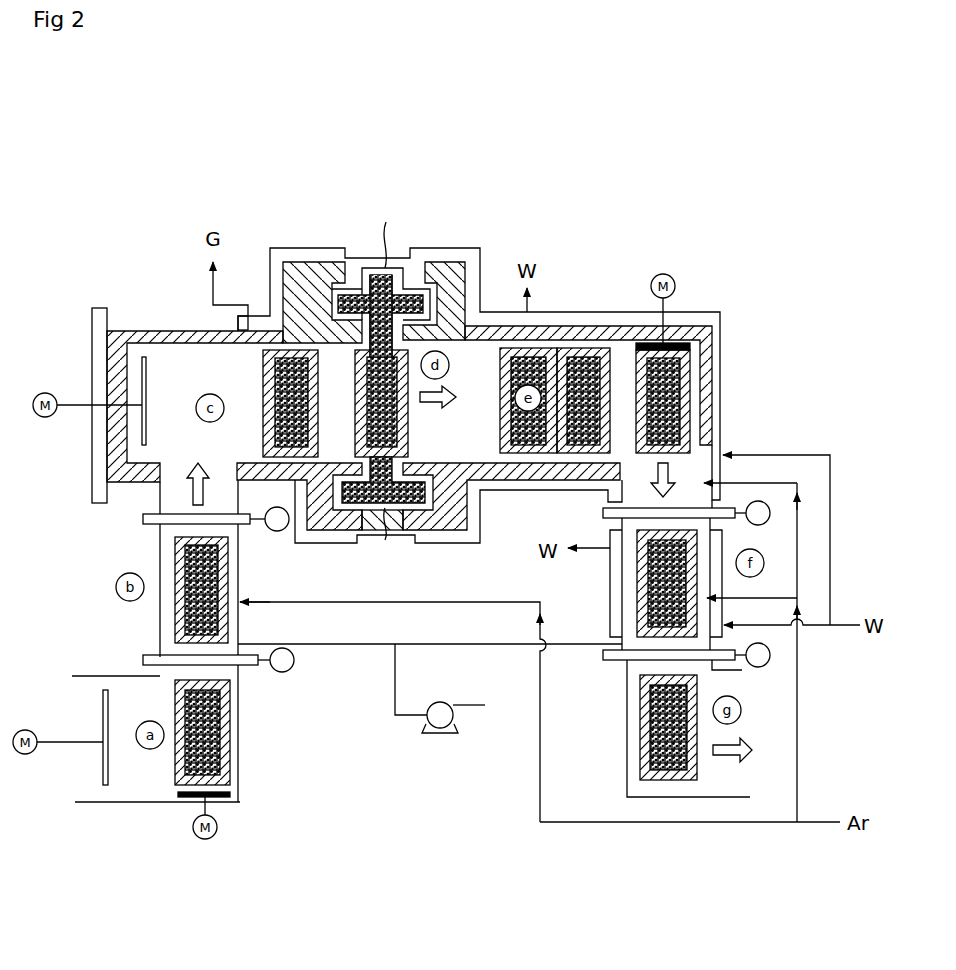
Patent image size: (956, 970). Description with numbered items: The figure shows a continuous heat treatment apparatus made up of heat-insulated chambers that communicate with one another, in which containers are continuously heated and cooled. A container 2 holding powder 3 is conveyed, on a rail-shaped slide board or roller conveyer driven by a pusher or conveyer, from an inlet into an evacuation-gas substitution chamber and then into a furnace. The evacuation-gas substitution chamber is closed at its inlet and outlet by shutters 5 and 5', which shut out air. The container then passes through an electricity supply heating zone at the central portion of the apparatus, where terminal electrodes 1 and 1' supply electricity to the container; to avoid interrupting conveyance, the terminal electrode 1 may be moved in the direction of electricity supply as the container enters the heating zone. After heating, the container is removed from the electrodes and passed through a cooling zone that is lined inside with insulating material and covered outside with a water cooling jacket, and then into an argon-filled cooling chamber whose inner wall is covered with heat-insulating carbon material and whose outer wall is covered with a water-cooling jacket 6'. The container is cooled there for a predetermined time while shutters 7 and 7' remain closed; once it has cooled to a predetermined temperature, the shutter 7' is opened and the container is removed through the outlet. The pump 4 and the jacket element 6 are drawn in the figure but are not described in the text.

The terminal electrode 1 is at (394, 284).
The terminal electrode 1' is at (403, 515).
The container 2 is at (262, 372).
The powder 3 is at (289, 362).
The vacuum pump 4 is at (440, 706).
The shutter 5 is at (218, 684).
The shutter 5' is at (216, 542).
The cooling jacket 6 is at (745, 583).
The water-cooling jacket 6' is at (504, 354).
The shutter 7 is at (661, 512).
The shutter 7' is at (667, 673).